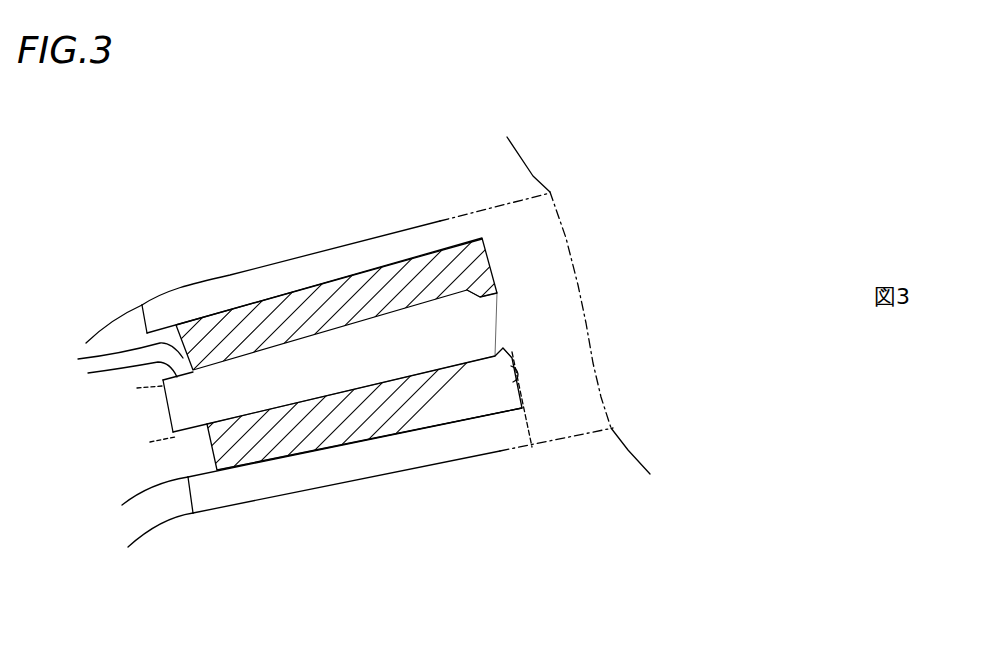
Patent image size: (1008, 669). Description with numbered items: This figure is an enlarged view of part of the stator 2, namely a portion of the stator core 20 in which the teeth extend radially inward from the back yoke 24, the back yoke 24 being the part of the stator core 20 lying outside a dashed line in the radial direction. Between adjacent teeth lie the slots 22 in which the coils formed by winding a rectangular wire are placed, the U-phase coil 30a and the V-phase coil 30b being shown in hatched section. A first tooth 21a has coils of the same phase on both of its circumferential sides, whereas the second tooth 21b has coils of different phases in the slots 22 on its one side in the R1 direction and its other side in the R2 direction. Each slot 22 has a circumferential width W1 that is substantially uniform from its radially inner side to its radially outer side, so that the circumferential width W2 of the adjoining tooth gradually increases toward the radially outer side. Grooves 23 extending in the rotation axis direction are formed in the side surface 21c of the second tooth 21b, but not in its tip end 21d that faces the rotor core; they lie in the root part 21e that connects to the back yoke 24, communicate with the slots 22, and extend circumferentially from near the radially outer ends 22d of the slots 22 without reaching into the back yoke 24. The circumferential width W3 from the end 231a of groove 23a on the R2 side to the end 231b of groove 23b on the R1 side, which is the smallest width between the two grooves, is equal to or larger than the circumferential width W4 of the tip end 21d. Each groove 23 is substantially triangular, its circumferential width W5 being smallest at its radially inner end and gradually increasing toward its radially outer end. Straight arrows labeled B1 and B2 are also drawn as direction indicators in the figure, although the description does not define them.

The stator 2 is at (624, 279).
The stator core 20 is at (637, 119).
The first tooth 21a is at (202, 300).
The second tooth 21b is at (107, 381).
The side surface 21c is at (396, 398).
The tip end 21d is at (150, 441).
The root part 21e is at (507, 326).
The slot 22 is at (120, 426).
The radially outer end 22d is at (517, 378).
The groove 23 is at (340, 345).
The groove 23a is at (498, 340).
The groove 23b is at (467, 237).
The end of groove 231a is at (507, 343).
The end of groove 231b is at (480, 298).
The back yoke 24 is at (580, 393).
The U-phase coil 30a is at (340, 447).
The V-phase coil 30b is at (340, 345).
The circumferential width of slot W1 is at (189, 437).
The circumferential width of tooth W2 is at (252, 360).
The circumferential width of grooved part of second tooth W3 is at (503, 347).
The circumferential width of tip end W4 is at (150, 389).
The circumferential width of groove W5 is at (507, 242).
The circumferential direction R1 is at (685, 160).
The circumferential direction R2 is at (737, 191).
The circumferential direction B1 is at (737, 493).
The circumferential direction B2 is at (667, 510).